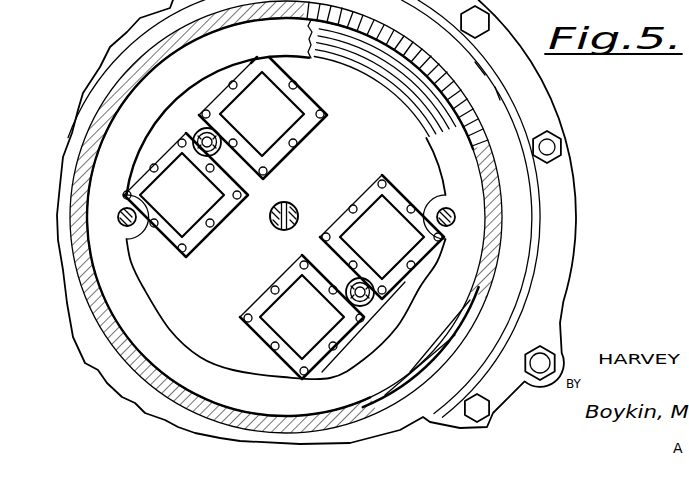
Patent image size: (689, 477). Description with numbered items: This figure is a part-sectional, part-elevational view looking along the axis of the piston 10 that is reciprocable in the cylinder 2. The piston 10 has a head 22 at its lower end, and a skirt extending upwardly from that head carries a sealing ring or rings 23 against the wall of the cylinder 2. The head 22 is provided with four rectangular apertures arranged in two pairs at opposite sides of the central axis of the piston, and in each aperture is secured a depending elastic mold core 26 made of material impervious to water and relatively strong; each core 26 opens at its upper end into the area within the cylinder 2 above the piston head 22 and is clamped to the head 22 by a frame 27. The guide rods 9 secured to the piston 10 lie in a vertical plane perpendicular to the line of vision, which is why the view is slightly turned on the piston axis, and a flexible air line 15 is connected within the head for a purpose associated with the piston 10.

The cylinder 2 is at (493, 186).
The guide rods 9 is at (132, 224).
The piston 10 is at (358, 38).
The flexible air line 15 is at (200, 138).
The head 22 is at (398, 148).
The sealing ring 23 is at (420, 83).
The elastic mold core 26 is at (290, 116).
The frames 27 is at (298, 86).